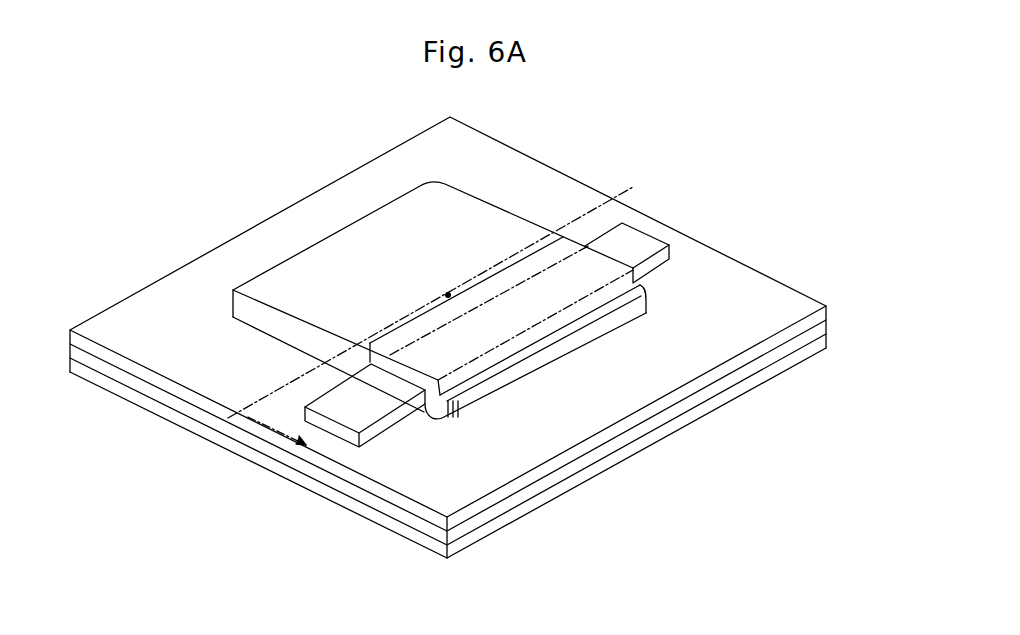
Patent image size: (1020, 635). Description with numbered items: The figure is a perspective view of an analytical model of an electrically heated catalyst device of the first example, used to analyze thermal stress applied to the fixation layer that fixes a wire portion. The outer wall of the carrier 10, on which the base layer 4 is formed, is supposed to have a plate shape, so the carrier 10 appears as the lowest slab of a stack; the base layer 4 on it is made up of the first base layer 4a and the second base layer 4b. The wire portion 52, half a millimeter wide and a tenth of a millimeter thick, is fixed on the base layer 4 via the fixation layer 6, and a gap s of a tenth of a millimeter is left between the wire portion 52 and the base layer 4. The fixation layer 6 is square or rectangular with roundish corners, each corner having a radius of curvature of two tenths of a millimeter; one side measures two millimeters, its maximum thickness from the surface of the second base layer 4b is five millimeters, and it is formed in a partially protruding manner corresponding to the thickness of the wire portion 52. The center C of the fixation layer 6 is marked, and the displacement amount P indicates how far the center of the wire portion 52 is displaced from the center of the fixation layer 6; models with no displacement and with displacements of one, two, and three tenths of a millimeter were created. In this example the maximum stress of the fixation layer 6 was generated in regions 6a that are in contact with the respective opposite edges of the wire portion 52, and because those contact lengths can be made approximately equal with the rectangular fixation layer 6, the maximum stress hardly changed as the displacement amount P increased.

The base layer 4 is at (884, 270).
The second base layer 4b is at (827, 308).
The first base layer 4a is at (827, 320).
The carrier 10 is at (827, 340).
The fixation layer 6 is at (483, 217).
The regions of the fixation layer 6a is at (465, 318).
The wire portion 52 is at (365, 433).
The center of the fixation layer C is at (430, 302).
The displacement amount P is at (277, 424).
The gap s is at (424, 413).